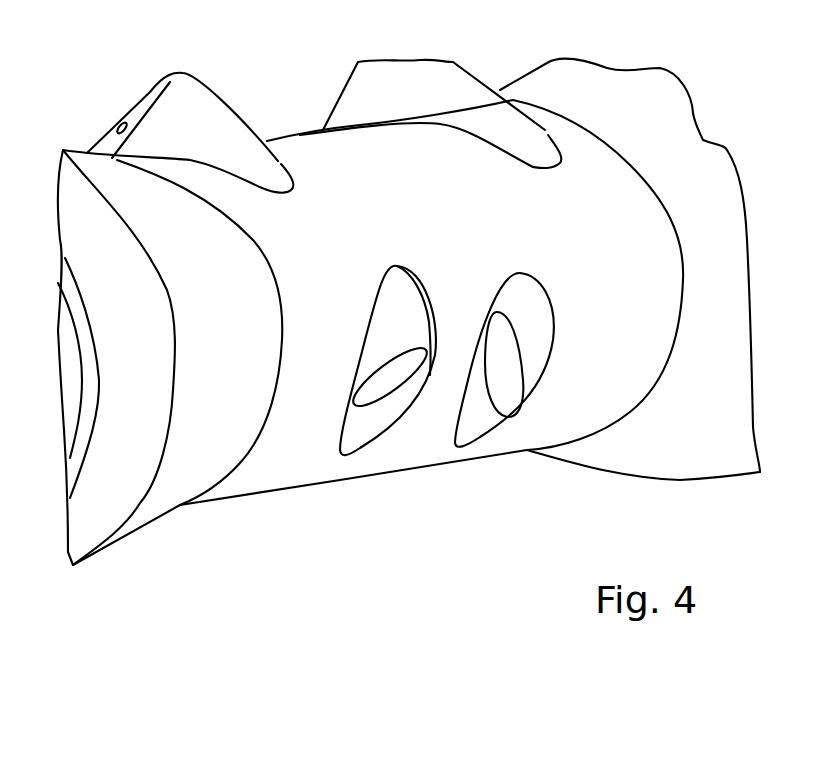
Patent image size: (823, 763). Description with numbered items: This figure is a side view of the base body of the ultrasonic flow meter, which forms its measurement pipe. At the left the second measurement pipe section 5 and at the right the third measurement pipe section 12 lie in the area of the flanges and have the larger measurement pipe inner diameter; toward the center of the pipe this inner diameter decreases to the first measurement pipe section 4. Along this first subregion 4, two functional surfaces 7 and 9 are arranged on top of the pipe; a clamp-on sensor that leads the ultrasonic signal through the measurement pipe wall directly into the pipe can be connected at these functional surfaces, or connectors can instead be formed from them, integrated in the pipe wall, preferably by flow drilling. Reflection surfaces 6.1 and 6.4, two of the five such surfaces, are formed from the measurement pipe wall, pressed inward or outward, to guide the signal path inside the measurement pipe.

The first measurement pipe section 4 is at (272, 478).
The second measurement pipe section 5 is at (107, 512).
The reflection surface 6.1 is at (387, 383).
The reflection surface 6.4 is at (513, 397).
The functional surface 7 is at (150, 100).
The functional surface 9 is at (480, 90).
The third measurement pipe section 12 is at (723, 462).